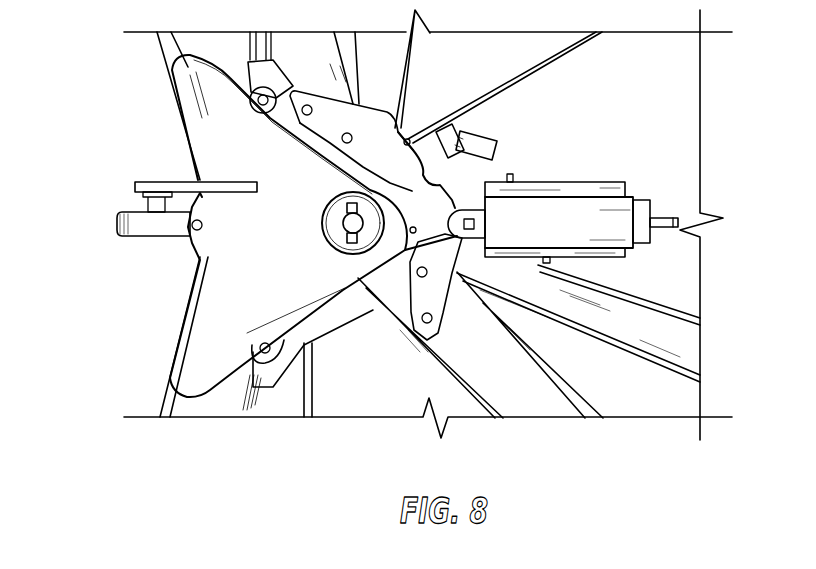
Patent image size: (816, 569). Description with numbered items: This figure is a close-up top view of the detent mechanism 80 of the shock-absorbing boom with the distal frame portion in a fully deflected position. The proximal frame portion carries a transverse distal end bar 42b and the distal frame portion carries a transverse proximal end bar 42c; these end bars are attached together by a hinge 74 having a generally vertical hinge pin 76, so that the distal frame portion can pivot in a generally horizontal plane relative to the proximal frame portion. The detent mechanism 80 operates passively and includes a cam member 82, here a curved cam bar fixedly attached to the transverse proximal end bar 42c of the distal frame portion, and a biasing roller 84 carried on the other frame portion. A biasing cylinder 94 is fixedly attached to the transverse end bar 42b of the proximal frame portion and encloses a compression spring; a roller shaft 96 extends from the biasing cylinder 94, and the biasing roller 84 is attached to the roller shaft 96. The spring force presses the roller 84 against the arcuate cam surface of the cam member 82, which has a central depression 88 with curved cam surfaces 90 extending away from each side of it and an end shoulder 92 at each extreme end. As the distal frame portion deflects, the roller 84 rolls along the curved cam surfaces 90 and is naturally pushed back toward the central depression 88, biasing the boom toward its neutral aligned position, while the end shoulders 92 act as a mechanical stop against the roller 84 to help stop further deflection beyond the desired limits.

The transverse distal end bar 42b is at (275, 400).
The transverse proximal end bar 42c is at (497, 405).
The hinge 74 is at (140, 108).
The hinge pin 76 is at (348, 223).
The detent mechanism 80 is at (581, 185).
The cam member 82 is at (545, 372).
The biasing roller 84 is at (464, 234).
The central depression 88 is at (482, 134).
The curved cam surfaces 90 is at (407, 142).
The end shoulder 92 is at (398, 130).
The biasing cylinder 94 is at (565, 236).
The roller shaft 96 is at (512, 185).